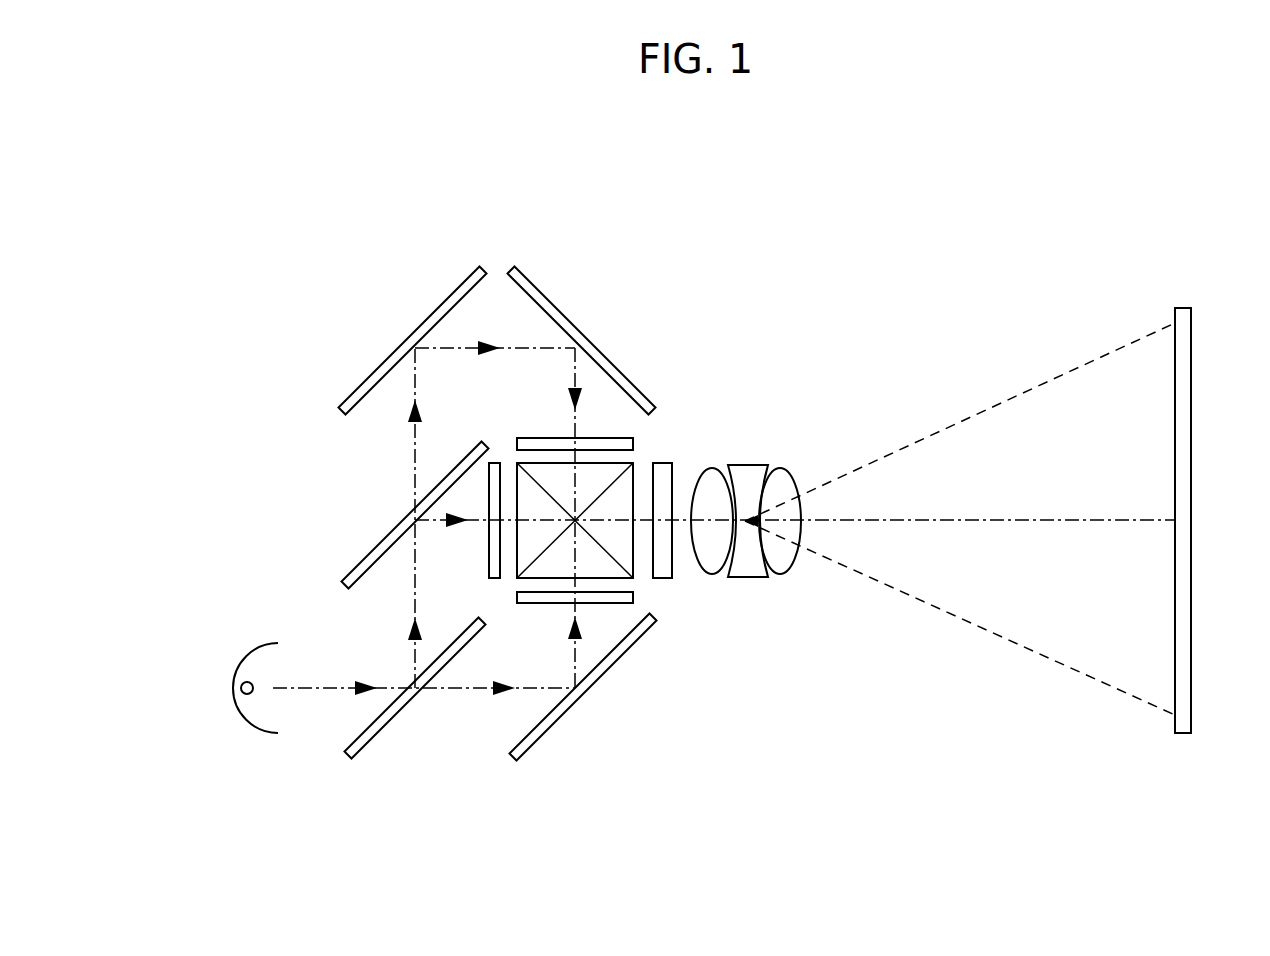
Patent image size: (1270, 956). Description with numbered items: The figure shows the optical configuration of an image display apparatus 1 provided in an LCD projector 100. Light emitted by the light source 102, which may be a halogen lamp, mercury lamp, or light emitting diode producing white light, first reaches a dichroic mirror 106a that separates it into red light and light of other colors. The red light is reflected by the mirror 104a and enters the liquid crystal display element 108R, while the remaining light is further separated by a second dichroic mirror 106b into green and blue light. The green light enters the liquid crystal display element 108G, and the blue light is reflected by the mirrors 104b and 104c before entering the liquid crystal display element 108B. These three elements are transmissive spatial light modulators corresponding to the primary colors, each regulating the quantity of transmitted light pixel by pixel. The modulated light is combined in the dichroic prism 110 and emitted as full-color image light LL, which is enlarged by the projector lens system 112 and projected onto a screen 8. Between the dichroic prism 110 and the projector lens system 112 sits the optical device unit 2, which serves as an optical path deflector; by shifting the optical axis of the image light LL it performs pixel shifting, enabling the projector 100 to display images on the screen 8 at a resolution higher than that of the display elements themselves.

The LCD projector 100 is at (1027, 230).
The image display apparatus 1 is at (702, 537).
The light source 102 is at (275, 735).
The mirror 104a is at (543, 737).
The mirror 104b is at (437, 308).
The mirror 104c is at (547, 298).
The dichroic mirror 106a is at (375, 740).
The dichroic mirror 106b is at (362, 563).
The liquid crystal display element 108R is at (550, 603).
The liquid crystal display element 108G is at (490, 533).
The liquid crystal display element 108B is at (635, 442).
The dichroic prism 110 is at (634, 466).
The optical device unit 2 is at (677, 560).
The projector lens system 112 is at (802, 585).
The screen 8 is at (1183, 735).
The image light LL is at (641, 523).